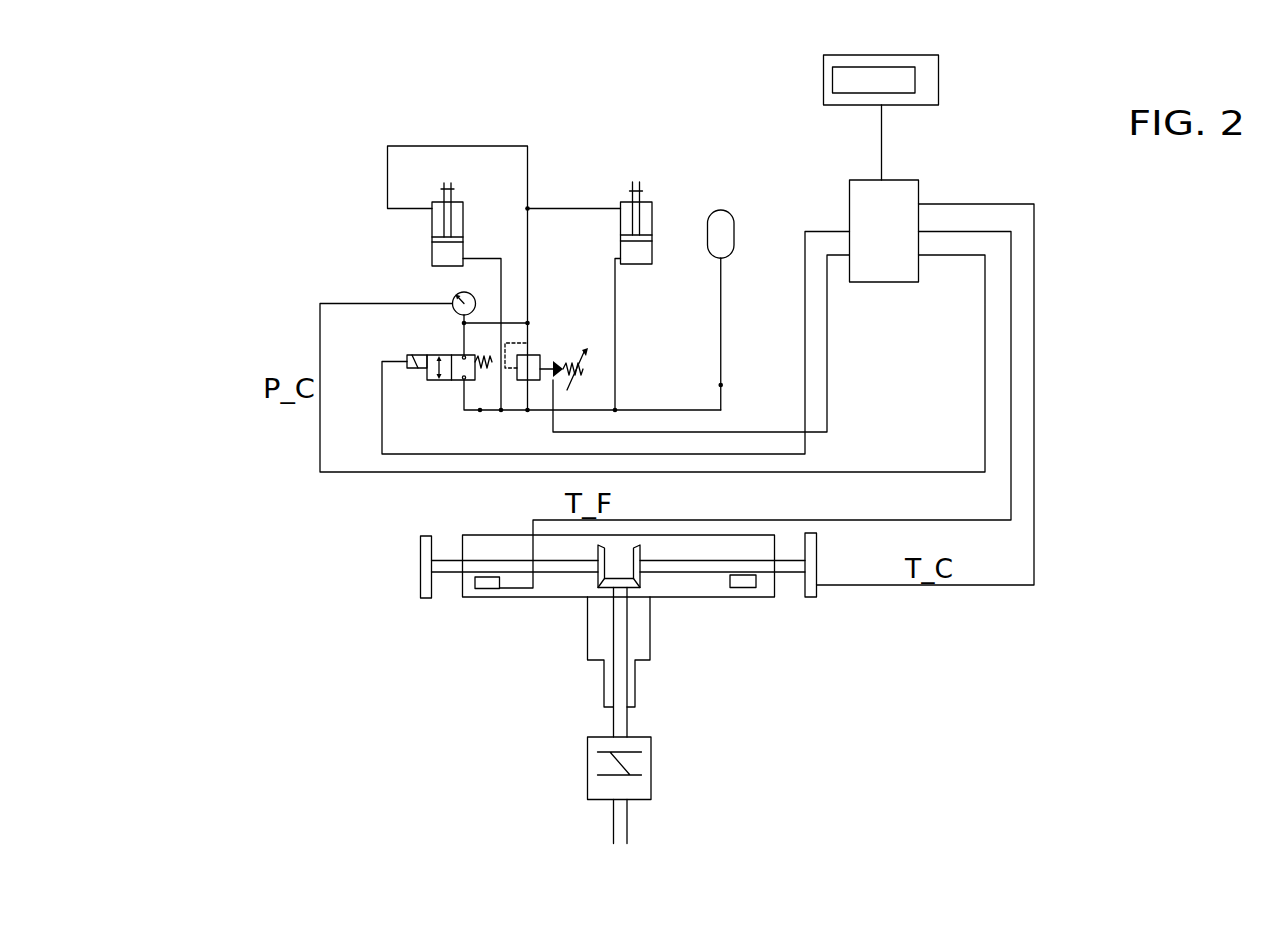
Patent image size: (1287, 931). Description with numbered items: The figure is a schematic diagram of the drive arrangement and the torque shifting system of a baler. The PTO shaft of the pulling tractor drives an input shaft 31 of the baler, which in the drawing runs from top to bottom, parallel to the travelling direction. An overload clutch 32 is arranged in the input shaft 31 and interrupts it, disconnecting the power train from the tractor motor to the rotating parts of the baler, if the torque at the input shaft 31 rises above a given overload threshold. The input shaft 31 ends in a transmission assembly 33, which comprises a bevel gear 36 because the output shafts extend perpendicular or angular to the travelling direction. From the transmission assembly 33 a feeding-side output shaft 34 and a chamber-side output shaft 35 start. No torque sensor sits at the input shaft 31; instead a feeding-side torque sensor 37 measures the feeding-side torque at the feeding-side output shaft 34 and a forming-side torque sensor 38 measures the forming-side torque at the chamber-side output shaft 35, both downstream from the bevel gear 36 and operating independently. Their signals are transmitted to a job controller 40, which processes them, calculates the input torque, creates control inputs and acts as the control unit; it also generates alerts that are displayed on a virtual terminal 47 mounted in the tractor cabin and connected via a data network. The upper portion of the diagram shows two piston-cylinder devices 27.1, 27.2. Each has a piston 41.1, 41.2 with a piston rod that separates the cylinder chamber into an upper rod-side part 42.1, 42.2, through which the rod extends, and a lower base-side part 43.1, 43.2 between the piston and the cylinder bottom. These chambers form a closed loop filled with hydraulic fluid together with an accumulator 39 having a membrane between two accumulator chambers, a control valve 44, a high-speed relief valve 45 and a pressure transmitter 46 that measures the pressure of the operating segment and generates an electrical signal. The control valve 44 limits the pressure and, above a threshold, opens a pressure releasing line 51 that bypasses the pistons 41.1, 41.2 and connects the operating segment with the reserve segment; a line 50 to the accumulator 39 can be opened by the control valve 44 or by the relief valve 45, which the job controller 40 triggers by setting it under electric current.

The piston-cylinder device 27.1 is at (416, 170).
The piston-cylinder device 27.2 is at (614, 165).
The piston 41.1 is at (450, 189).
The piston 41.2 is at (639, 191).
The rod-side chamber part 42.1 is at (438, 219).
The rod-side chamber part 42.2 is at (646, 218).
The base-side chamber part 43.1 is at (439, 255).
The base-side chamber part 43.2 is at (637, 253).
The accumulator 39 is at (721, 227).
The control valve 44 is at (535, 362).
The high-speed relief valve 45 is at (446, 368).
The pressure transmitter 46 is at (453, 308).
The line to the reservoir 50 is at (721, 385).
The pressure releasing line 51 is at (480, 410).
The job controller 40 is at (887, 272).
The virtual terminal 47 is at (937, 95).
The transmission assembly 33 is at (487, 551).
The feeding-side output shaft 34 is at (450, 568).
The chamber-side output shaft 35 is at (788, 563).
The bevel gear 36 is at (618, 563).
The feeding-side torque sensor 37 is at (487, 583).
The forming-side torque sensor 38 is at (744, 581).
The input shaft 31 is at (620, 821).
The overload clutch 32 is at (644, 766).